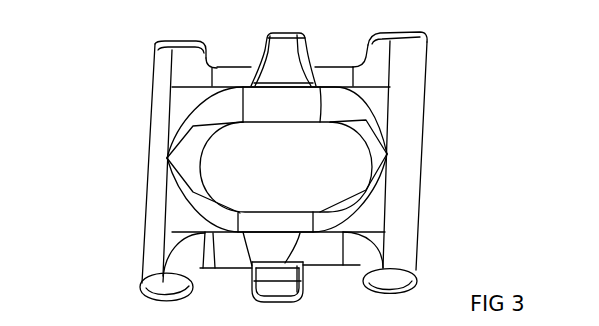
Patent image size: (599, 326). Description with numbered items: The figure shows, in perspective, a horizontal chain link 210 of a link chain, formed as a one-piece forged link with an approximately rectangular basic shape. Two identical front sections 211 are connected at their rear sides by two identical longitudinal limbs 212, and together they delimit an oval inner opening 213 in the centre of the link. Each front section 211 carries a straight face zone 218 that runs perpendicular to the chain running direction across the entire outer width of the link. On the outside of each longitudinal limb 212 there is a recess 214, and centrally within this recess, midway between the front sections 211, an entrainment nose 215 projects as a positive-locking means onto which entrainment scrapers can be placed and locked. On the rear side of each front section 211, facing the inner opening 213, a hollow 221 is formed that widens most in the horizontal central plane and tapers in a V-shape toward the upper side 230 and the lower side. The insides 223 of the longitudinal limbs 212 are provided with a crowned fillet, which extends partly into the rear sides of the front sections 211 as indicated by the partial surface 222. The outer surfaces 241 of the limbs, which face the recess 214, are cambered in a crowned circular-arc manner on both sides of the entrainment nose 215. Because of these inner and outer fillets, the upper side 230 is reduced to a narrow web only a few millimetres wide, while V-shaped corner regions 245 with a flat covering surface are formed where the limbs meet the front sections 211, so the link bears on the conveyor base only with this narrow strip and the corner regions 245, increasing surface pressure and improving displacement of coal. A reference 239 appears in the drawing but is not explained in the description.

The horizontal chain link 210 is at (93, 92).
The front section 211 is at (155, 143).
The longitudinal limb 212 is at (342, 84).
The inner opening 213 is at (298, 180).
The recess 214 is at (218, 38).
The entrainment nose 215 is at (286, 44).
The face zone 218 is at (143, 198).
The hollow 221 is at (196, 160).
The partial surface 222 is at (228, 108).
The inside of longitudinal limb 223 is at (297, 103).
The upper side 230 is at (372, 213).
The upper step face 239 is at (229, 86).
The outer surface of longitudinal limb 241 is at (364, 62).
The corner region 245 is at (375, 90).